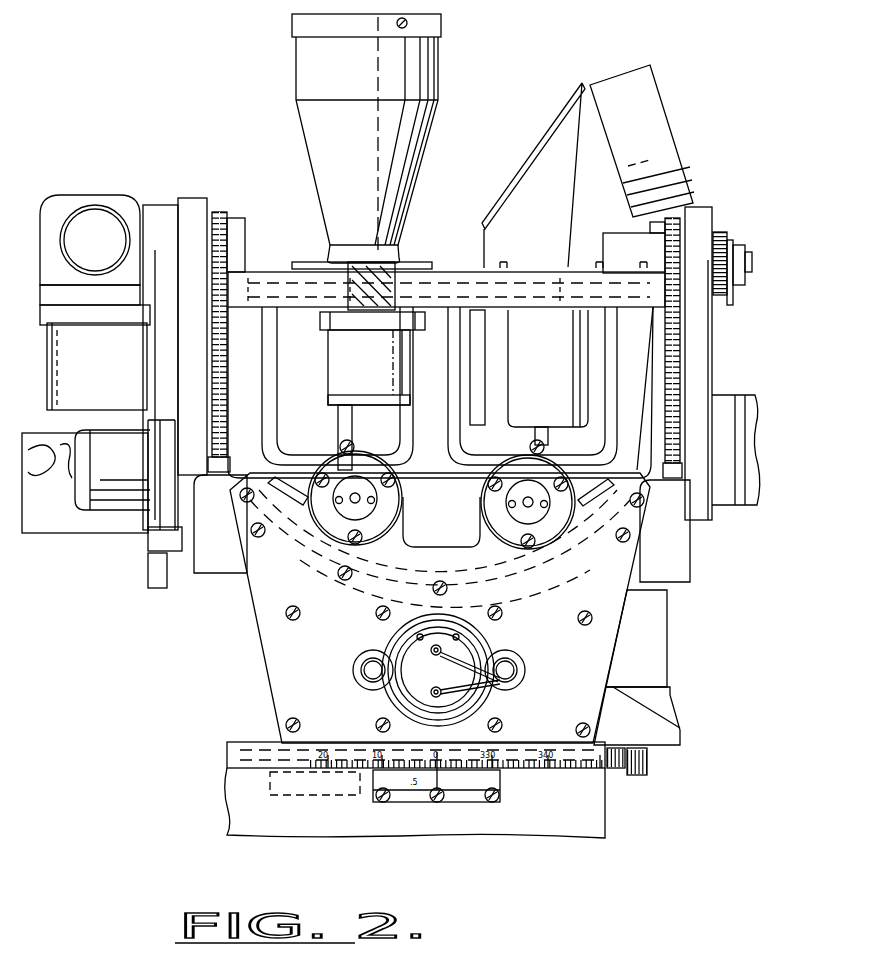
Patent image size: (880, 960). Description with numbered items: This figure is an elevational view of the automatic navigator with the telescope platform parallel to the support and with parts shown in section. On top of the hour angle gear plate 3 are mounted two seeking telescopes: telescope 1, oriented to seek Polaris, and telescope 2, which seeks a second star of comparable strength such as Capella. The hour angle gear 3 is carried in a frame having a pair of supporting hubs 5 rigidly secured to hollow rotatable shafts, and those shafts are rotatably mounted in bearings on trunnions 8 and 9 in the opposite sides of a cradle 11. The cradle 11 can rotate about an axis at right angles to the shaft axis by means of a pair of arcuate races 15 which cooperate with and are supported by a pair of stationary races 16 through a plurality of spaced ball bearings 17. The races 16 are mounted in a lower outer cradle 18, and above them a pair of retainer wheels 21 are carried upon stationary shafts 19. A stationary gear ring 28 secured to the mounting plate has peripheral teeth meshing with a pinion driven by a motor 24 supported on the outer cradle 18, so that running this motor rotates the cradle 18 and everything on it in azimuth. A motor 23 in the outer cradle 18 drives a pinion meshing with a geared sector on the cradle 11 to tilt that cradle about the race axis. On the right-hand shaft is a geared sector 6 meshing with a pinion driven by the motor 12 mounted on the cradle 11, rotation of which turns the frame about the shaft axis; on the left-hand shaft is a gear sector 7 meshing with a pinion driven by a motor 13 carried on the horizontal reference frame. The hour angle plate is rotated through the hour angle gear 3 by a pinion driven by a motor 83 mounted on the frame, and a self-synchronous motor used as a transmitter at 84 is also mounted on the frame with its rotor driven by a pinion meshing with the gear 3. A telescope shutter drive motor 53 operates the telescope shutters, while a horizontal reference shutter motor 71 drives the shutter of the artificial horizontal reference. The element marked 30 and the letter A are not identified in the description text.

The telescope 1 is at (428, 72).
The telescope 2 is at (650, 115).
The hour angle gear plate 3 is at (444, 270).
The supporting hubs 5 is at (240, 246).
The geared sector 6 is at (680, 348).
The gear sector 7 is at (224, 424).
The trunnion 8 is at (705, 214).
The trunnion 9 is at (190, 205).
The cradle 11 is at (220, 572).
The motor 12 is at (740, 392).
The motor 13 is at (96, 523).
The arcuate races 15 is at (441, 512).
The stationary races 16 is at (440, 542).
The ball bearings 17 is at (445, 587).
The outer cradle 18 is at (283, 660).
The stationary shafts 19 is at (357, 480).
The retainer wheels 21 is at (400, 495).
The motor 23 is at (406, 680).
The motor 24 is at (655, 650).
The stationary gear ring 28 is at (618, 776).
The motor 30 is at (102, 504).
The telescope shutter drive motor 53 is at (490, 336).
The horizontal reference shutter motor 71 is at (97, 366).
The motor 83 is at (565, 380).
The self-synchronous motor 84 is at (345, 375).
The frame A is at (270, 355).